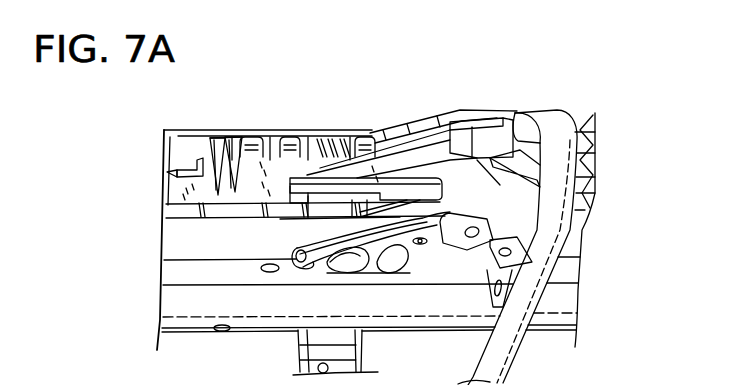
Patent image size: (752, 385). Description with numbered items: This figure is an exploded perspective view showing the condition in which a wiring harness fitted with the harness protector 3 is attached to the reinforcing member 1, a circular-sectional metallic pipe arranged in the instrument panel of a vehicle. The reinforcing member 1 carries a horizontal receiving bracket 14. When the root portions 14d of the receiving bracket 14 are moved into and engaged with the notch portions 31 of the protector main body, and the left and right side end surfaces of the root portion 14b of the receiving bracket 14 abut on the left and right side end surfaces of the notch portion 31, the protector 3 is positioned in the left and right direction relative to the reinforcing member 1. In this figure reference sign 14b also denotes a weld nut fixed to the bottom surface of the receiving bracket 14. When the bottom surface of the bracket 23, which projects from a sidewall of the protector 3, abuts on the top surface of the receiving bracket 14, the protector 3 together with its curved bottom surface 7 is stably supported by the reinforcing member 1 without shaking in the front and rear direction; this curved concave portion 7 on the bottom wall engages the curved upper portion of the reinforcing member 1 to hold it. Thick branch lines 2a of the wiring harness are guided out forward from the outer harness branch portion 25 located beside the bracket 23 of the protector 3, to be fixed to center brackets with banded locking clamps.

The reinforcing member 1 is at (415, 334).
The thick branch lines 2a is at (546, 120).
The harness protector 3 is at (283, 125).
The curved concave portion 7 is at (330, 219).
The receiving bracket 14 is at (406, 266).
The root portion of the receiving bracket 14b is at (420, 244).
The root portions of the receiving bracket 14d is at (298, 268).
The bracket 23 is at (413, 125).
The harness branch portion 25 is at (463, 179).
The notch portion 31 is at (325, 193).